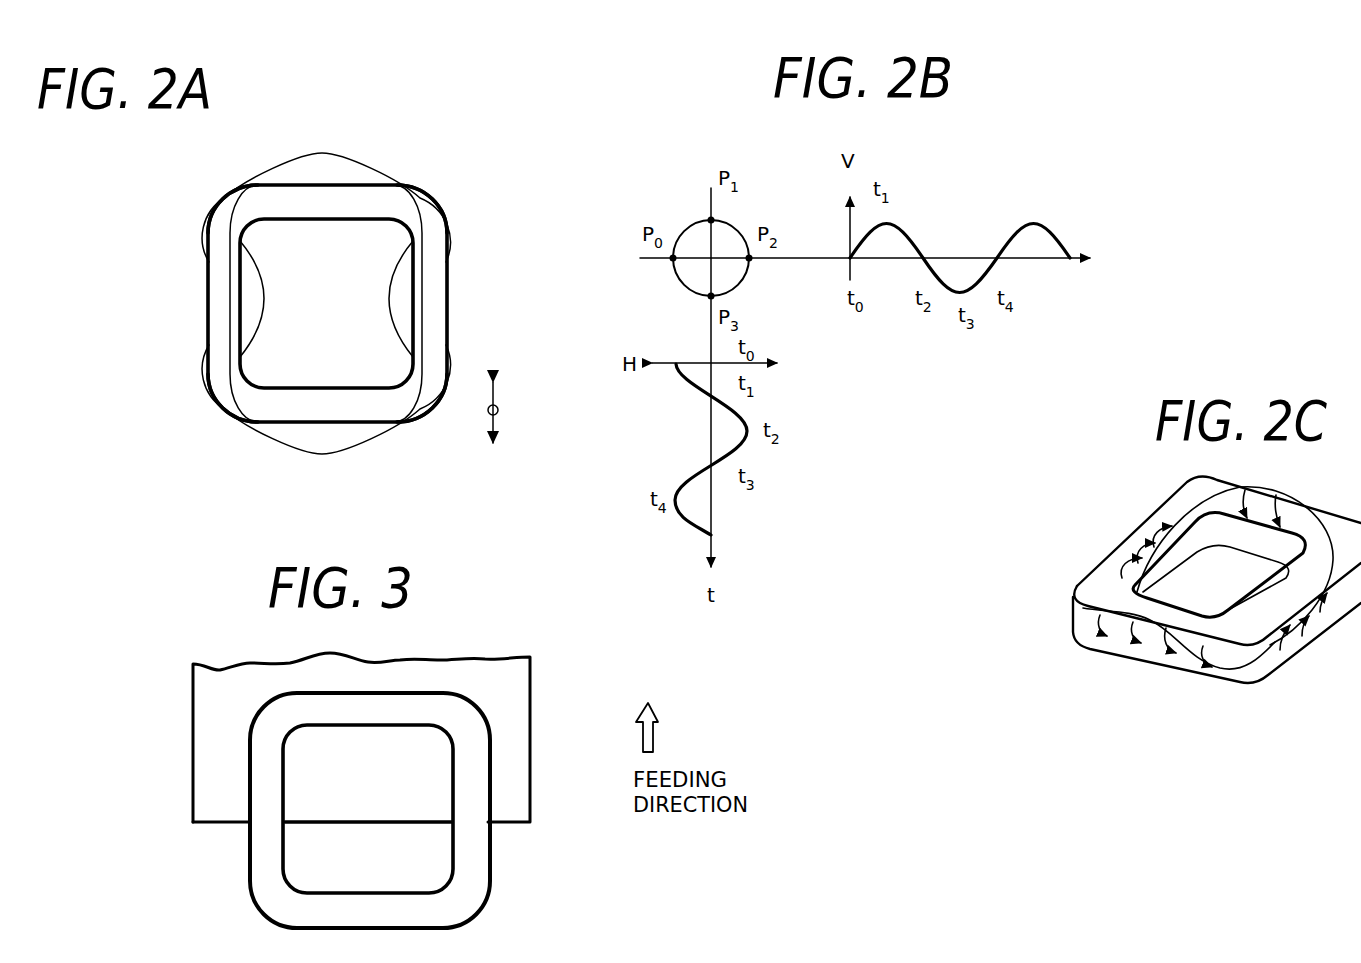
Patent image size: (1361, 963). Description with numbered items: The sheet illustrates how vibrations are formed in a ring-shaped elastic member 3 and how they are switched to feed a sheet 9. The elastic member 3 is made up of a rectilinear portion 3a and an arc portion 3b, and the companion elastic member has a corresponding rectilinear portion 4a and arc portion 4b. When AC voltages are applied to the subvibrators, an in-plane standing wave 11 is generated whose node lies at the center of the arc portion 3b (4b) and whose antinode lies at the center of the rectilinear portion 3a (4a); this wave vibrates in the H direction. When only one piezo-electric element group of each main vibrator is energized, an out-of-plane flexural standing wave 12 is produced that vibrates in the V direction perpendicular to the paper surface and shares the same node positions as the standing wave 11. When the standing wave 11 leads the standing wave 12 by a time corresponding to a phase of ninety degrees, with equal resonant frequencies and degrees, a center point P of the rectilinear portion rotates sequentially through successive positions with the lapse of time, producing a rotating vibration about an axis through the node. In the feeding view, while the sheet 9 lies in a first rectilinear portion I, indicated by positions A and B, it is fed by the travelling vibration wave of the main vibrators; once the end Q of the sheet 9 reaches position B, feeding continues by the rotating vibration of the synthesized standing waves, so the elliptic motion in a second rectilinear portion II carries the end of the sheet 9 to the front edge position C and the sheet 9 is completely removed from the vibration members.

In FIG. 2A, the rectilinear portion 3a is at (320, 309).
In FIG. 2A, the rectilinear portion 4a is at (298, 196).
In FIG. 2A, the arc portion 3b is at (323, 329).
In FIG. 2A, the arc portion 4b is at (222, 208).
In FIG. 2A, the standing wave 11 is at (357, 160).
In FIG. 2B, the standing wave 11 is at (696, 486).
In FIG. 2A, the center point of the rectilinear portion P is at (320, 212).
In FIG. 2A, the H direction H is at (505, 395).
In FIG. 2A, the V direction V is at (517, 410).
In FIG. 2B, the standing wave 12 is at (907, 226).
In FIG. 3, the sheet 9 is at (517, 707).
In FIG. 3, the elastic member 3 is at (473, 867).
In FIG. 3, the position A is at (247, 862).
In FIG. 3, the position B is at (249, 747).
In FIG. 3, the front edge position C is at (277, 692).
In FIG. 3, the end of the sheet Q is at (192, 820).
In FIG. 3, the first rectilinear portion I is at (269, 873).
In FIG. 3, the second rectilinear portion II is at (411, 716).